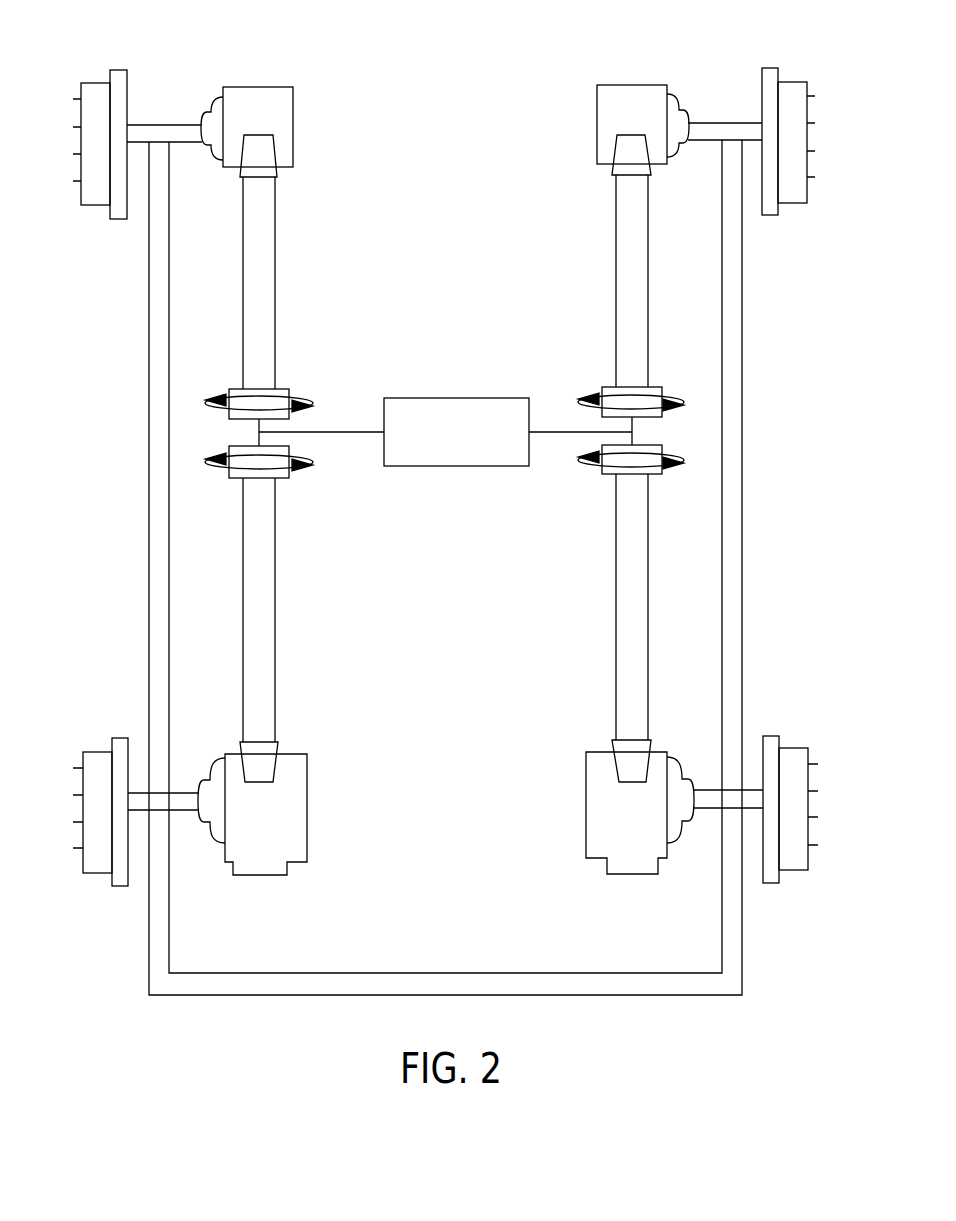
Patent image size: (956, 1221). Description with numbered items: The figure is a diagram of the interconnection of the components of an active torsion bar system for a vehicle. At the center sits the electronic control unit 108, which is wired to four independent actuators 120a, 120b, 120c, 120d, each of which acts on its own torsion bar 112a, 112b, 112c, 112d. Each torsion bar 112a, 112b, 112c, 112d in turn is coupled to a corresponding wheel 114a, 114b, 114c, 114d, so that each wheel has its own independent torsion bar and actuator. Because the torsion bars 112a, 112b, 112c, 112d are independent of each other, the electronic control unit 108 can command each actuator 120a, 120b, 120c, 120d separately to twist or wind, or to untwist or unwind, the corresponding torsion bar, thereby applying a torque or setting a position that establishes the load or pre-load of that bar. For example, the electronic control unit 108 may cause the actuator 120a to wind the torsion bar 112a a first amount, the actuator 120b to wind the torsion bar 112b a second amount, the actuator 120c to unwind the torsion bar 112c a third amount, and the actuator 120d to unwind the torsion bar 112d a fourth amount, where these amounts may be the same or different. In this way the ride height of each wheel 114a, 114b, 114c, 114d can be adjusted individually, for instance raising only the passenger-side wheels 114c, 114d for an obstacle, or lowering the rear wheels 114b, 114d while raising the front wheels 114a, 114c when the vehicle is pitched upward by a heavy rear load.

The electronic control unit 108 is at (487, 407).
The torsion bar 112a is at (267, 288).
The torsion bar 112b is at (268, 562).
The torsion bar 112c is at (623, 268).
The torsion bar 112d is at (625, 548).
The wheel 114a is at (92, 92).
The wheel 114b is at (97, 760).
The wheel 114c is at (791, 90).
The wheel 114d is at (792, 758).
The actuator 120a is at (283, 393).
The actuator 120b is at (278, 473).
The actuator 120c is at (610, 392).
The actuator 120d is at (610, 471).